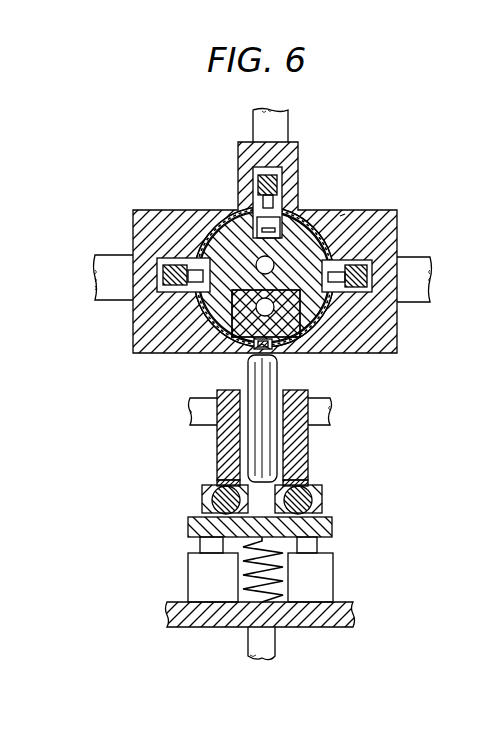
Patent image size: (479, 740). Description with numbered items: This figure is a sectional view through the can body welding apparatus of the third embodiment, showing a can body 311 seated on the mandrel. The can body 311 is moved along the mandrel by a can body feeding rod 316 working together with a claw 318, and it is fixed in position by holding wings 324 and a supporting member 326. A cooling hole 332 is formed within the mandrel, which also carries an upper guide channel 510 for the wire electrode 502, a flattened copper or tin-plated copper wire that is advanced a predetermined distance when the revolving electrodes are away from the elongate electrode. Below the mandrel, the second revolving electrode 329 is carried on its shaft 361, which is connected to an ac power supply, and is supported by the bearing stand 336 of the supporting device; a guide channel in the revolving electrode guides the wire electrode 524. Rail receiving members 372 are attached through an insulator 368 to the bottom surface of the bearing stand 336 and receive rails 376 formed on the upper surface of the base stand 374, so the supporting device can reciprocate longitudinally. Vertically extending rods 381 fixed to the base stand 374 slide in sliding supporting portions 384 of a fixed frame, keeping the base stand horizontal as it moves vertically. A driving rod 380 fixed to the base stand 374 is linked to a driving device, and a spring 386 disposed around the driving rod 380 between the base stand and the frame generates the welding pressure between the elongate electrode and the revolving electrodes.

The can body 311 is at (340, 336).
The can body feeding rod 316 is at (172, 262).
The claw 318 is at (283, 200).
The holding wing 324 is at (133, 333).
The supporting member 326 is at (291, 140).
The second revolving electrode 329 is at (280, 371).
The cooling hole 332 is at (238, 287).
The bearing stand 336 is at (303, 441).
The shaft 361 is at (330, 405).
The insulator 368 is at (305, 484).
The rail receiving member 372 is at (312, 500).
The base stand 374 is at (332, 530).
The rail 376 is at (320, 508).
The driving rod 380 is at (276, 645).
The vertically extending rod 381 is at (318, 548).
The sliding supporting portion 384 is at (334, 580).
The spring 386 is at (235, 575).
The wire electrode 502 is at (240, 210).
The upper guide channel 510 is at (341, 215).
The wire electrode 524 is at (252, 361).